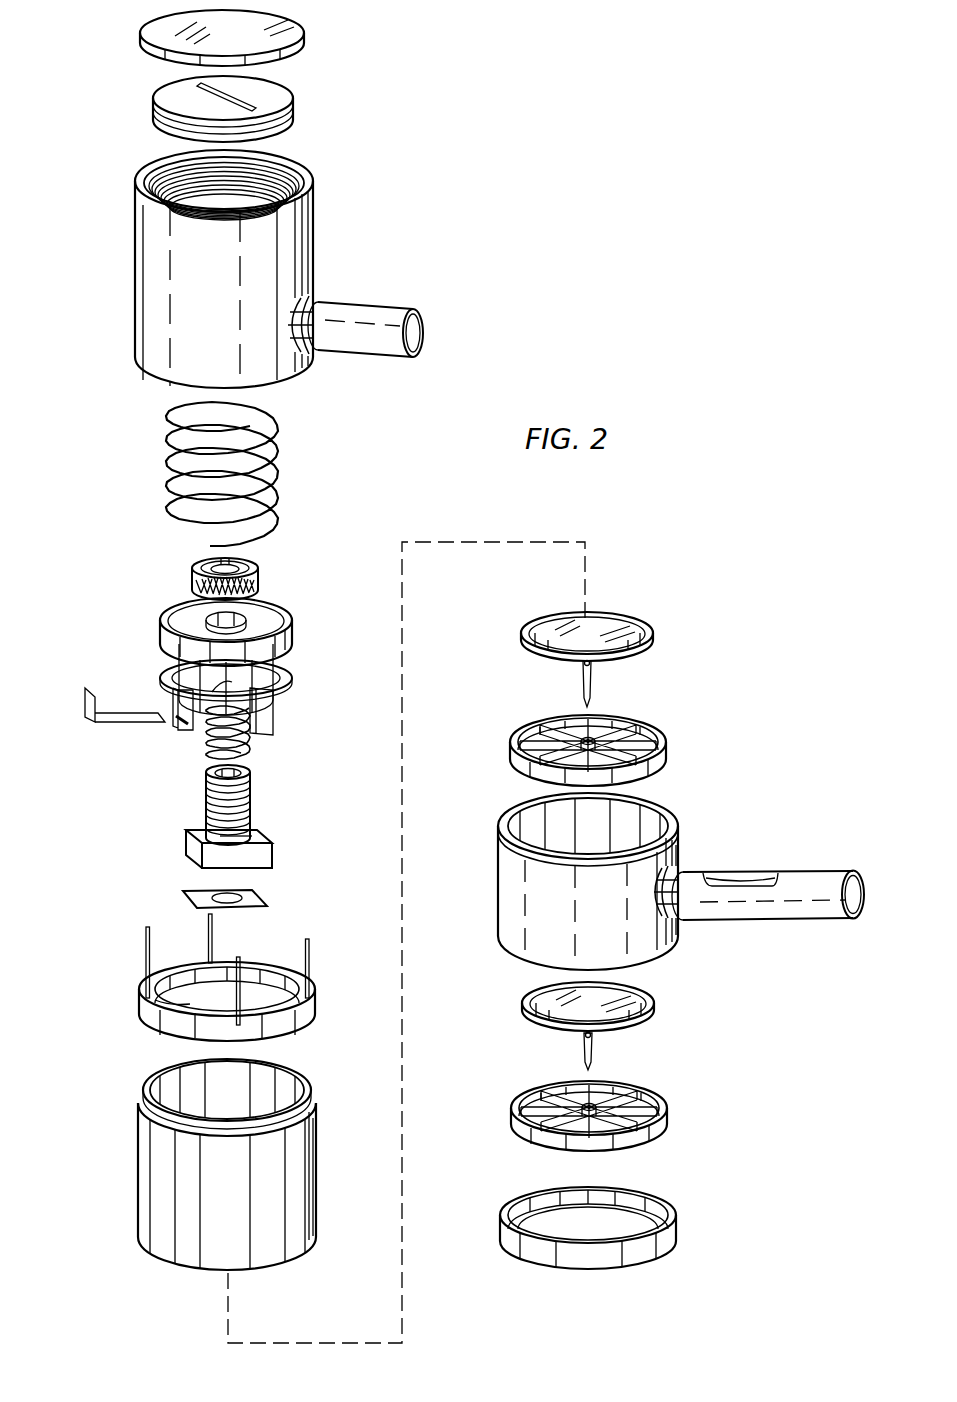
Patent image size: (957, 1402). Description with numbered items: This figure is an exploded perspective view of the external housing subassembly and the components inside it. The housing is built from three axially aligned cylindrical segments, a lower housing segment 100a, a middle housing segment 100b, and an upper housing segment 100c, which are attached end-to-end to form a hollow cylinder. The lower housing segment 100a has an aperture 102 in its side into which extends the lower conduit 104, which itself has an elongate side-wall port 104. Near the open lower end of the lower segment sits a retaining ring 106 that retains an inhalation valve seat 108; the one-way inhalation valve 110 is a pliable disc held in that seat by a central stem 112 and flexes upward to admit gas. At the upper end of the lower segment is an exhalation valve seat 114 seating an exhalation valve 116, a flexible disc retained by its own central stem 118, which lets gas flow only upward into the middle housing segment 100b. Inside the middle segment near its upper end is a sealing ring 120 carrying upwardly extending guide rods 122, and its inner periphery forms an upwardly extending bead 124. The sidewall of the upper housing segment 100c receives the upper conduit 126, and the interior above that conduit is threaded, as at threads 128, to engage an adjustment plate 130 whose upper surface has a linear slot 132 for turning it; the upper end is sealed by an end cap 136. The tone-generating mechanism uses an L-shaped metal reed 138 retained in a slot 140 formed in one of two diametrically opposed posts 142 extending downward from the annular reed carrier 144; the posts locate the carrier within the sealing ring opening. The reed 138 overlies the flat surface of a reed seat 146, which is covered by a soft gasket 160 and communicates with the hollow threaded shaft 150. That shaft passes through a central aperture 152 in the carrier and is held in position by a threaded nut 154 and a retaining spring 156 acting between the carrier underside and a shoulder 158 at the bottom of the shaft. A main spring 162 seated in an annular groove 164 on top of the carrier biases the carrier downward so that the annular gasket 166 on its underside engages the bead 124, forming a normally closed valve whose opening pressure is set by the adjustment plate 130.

The lower housing segment 100a is at (497, 890).
The middle housing segment 100b is at (318, 1158).
The upper housing segment 100c is at (314, 226).
The aperture 102 is at (760, 919).
The lower conduit 104 is at (722, 882).
The retaining ring 106 is at (677, 1232).
The inhalation valve seat 108 is at (667, 1117).
The inhalation valve 110 is at (655, 1011).
The central stem 112 is at (593, 1053).
The exhalation valve seat 114 is at (667, 757).
The exhalation valve 116 is at (654, 638).
The central stem 118 is at (593, 690).
The sealing ring 120 is at (316, 1012).
The guide rods 122 is at (208, 917).
The bead 124 is at (155, 1005).
The upper conduit 126 is at (380, 307).
The threads 128 is at (272, 186).
The adjustment plate 130 is at (295, 101).
The linear slot 132 is at (197, 87).
The end cap 136 is at (302, 40).
The reed 138 is at (118, 724).
The slot 140 is at (185, 722).
The posts 142 is at (177, 697).
The reed carrier 144 is at (162, 636).
The reed seat 146 is at (272, 856).
The threaded shaft 150 is at (251, 807).
The central aperture 152 is at (247, 616).
The threaded nut 154 is at (258, 578).
The retaining spring 156 is at (250, 745).
The shoulder 158 is at (262, 836).
The gasket 160 is at (267, 898).
The main spring 162 is at (282, 472).
The annular groove 164 is at (284, 628).
The annular gasket 166 is at (292, 682).